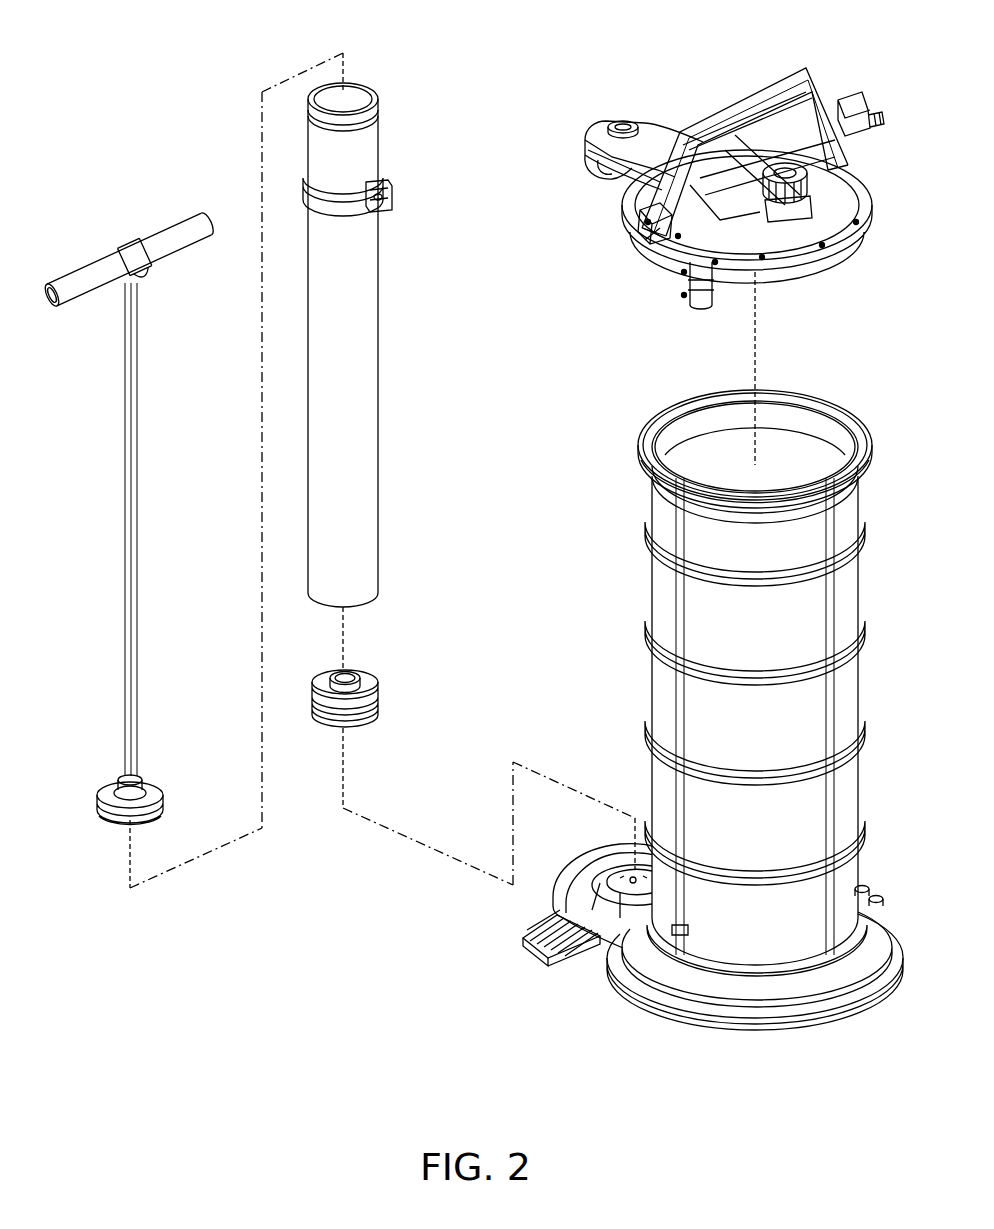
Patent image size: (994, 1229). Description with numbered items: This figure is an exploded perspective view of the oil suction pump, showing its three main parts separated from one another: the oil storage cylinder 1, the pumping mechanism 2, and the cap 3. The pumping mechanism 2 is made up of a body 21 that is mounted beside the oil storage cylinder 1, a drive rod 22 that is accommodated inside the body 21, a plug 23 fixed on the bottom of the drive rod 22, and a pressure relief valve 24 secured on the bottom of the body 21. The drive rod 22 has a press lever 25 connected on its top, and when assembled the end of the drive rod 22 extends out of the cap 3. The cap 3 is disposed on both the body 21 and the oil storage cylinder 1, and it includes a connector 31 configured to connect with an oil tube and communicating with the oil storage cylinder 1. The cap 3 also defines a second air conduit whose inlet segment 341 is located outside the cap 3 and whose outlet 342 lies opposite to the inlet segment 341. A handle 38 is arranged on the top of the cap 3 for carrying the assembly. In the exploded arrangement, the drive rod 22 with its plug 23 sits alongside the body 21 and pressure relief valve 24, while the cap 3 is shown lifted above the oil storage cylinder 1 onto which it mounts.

The oil storage cylinder 1 is at (858, 418).
The pumping mechanism 2 is at (171, 69).
The cap 3 is at (650, 135).
The body 21 is at (382, 135).
The drive rod 22 is at (125, 481).
The plug 23 is at (153, 782).
The pressure relief valve 24 is at (330, 673).
The press lever 25 is at (157, 232).
The connector 31 is at (865, 215).
The handle 38 is at (770, 82).
The inlet segment 341 is at (876, 120).
The outlet 342 is at (642, 225).